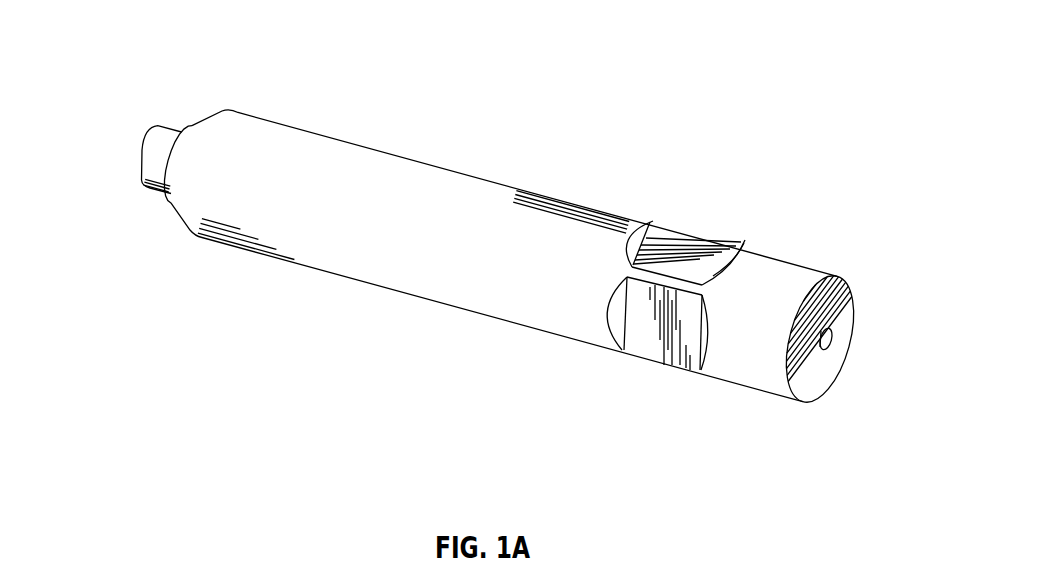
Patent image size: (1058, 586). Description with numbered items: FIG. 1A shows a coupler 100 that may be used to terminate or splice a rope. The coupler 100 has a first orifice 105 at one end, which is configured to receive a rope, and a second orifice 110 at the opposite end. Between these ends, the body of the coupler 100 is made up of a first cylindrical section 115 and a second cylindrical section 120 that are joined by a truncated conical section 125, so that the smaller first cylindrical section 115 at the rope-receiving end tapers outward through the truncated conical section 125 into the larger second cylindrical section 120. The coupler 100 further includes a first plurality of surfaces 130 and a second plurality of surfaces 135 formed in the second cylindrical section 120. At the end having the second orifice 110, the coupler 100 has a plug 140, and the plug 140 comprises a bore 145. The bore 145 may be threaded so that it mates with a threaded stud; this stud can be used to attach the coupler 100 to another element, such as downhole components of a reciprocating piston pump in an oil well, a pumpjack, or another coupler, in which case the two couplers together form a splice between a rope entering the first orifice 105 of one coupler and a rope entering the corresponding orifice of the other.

The coupler 100 is at (777, 36).
The first orifice 105 is at (131, 156).
The second orifice 110 is at (870, 355).
The first cylindrical section 115 is at (155, 146).
The second cylindrical section 120 is at (430, 173).
The truncated conical section 125 is at (195, 137).
The first plurality of surfaces 130 is at (690, 243).
The second plurality of surfaces 135 is at (647, 240).
The plug 140 is at (820, 388).
The bore 145 is at (833, 333).